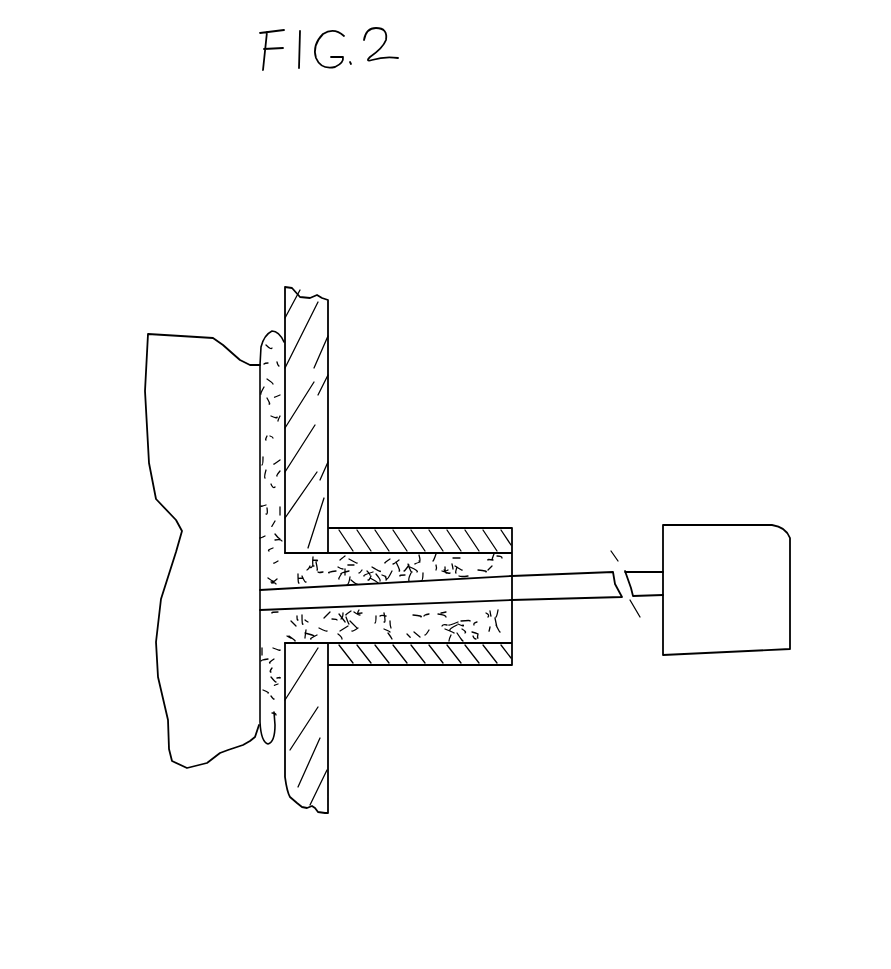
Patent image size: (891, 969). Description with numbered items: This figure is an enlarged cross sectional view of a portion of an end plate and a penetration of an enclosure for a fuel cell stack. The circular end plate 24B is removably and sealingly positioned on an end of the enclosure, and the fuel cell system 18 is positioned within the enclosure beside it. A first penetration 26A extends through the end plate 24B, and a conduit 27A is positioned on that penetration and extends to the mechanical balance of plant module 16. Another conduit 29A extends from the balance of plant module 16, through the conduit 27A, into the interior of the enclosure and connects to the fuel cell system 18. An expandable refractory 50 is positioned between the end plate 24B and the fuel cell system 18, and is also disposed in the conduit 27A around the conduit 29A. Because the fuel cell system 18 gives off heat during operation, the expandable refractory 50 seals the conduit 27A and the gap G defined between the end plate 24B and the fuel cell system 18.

The mechanical balance of plant module 16 is at (805, 577).
The fuel cell system 18 is at (200, 723).
The end plate 24B is at (325, 320).
The first penetration 26A is at (312, 553).
The conduit 27A is at (475, 528).
The conduit 29A is at (548, 575).
The expandable refractory 50 is at (604, 660).
The gap G is at (264, 310).